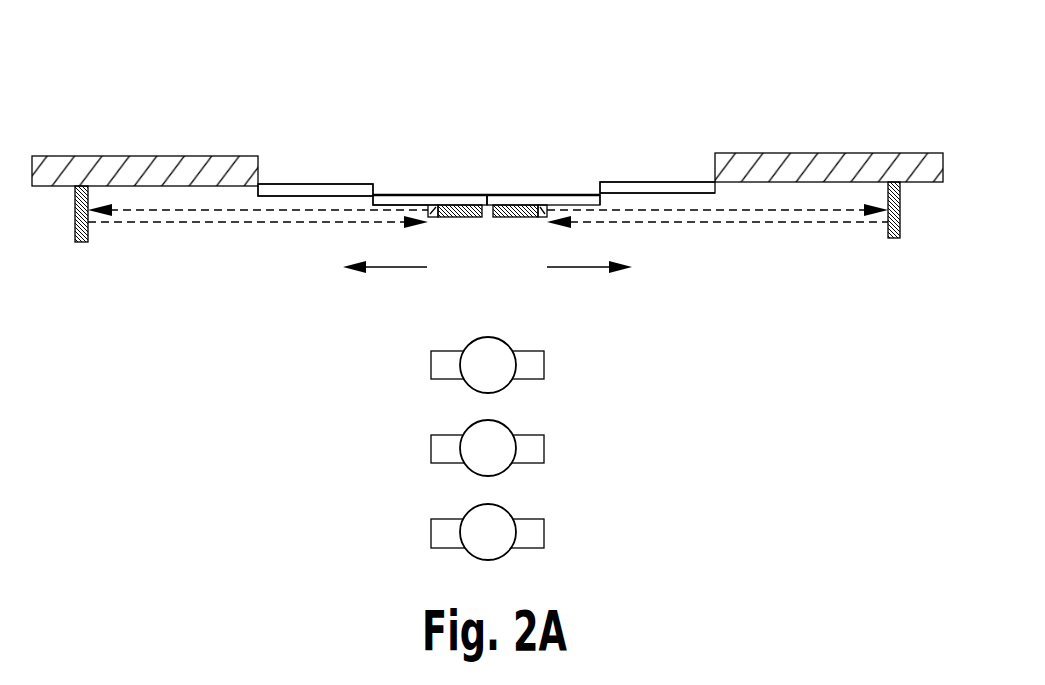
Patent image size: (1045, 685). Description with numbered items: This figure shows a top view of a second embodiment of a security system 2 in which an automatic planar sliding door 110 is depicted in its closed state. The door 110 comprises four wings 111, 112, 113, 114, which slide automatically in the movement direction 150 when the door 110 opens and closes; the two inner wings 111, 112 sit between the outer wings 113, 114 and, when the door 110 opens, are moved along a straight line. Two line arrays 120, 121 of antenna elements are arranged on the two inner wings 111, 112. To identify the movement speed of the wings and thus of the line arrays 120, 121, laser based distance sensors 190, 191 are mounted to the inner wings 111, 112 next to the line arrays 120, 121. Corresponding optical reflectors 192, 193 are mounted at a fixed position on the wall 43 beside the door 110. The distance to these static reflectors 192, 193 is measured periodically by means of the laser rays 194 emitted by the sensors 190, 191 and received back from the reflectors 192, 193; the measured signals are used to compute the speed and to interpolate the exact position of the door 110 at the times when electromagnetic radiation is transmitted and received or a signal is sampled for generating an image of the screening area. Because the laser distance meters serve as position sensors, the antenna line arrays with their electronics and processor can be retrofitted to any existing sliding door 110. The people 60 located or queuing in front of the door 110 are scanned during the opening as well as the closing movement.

The security system 2 is at (487, 197).
The wall 43 is at (908, 153).
The sliding door 110 is at (460, 176).
The inner wing 111 is at (393, 195).
The inner wing 112 is at (580, 195).
The wing 113 is at (300, 184).
The wing 114 is at (675, 182).
The laser based distance sensor 190 is at (438, 195).
The laser based distance sensor 191 is at (536, 195).
The line array of antenna elements 120 is at (460, 217).
The line array of antenna elements 121 is at (518, 217).
The movement direction 150 is at (586, 270).
The optical reflector 192 is at (82, 242).
The optical reflector 193 is at (893, 238).
The laser rays 194 is at (140, 228).
The people 60 is at (544, 363).